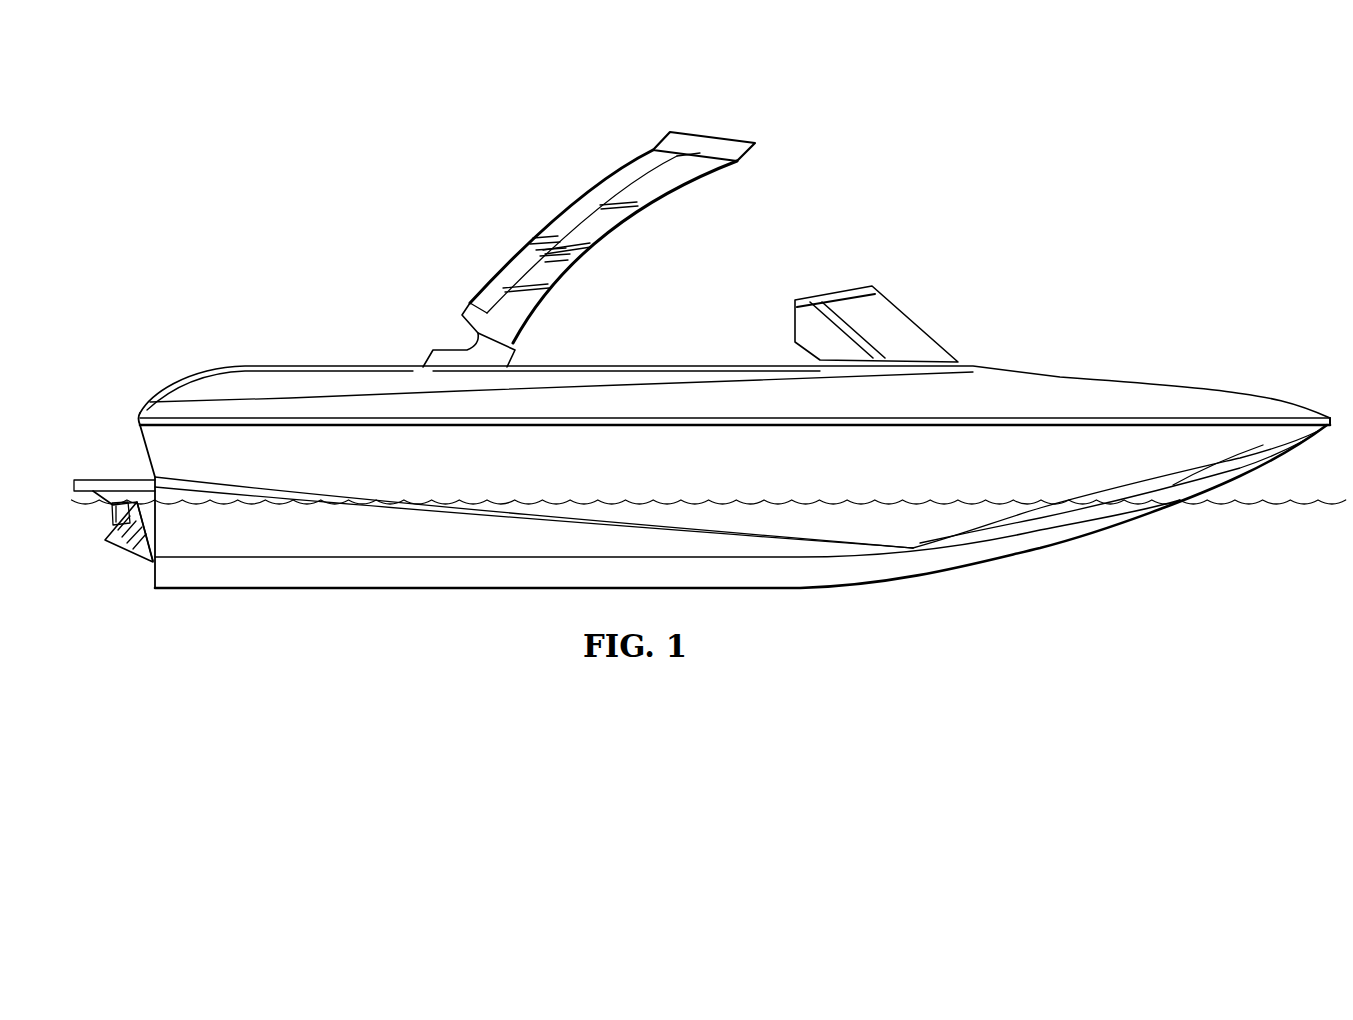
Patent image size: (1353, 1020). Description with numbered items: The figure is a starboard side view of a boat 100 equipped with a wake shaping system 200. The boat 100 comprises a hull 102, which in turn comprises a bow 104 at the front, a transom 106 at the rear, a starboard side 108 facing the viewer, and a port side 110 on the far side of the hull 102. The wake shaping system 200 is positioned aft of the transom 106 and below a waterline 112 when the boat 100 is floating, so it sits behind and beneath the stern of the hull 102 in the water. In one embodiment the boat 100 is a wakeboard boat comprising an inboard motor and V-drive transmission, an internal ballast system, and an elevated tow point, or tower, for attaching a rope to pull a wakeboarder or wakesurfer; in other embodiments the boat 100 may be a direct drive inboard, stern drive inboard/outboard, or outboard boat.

The boat 100 is at (403, 128).
The hull 102 is at (387, 543).
The bow 104 is at (1237, 393).
The transom 106 is at (190, 452).
The starboard side 108 is at (580, 450).
The port side 110 is at (330, 450).
The waterline 112 is at (1277, 505).
The wake shaping system 200 is at (127, 565).